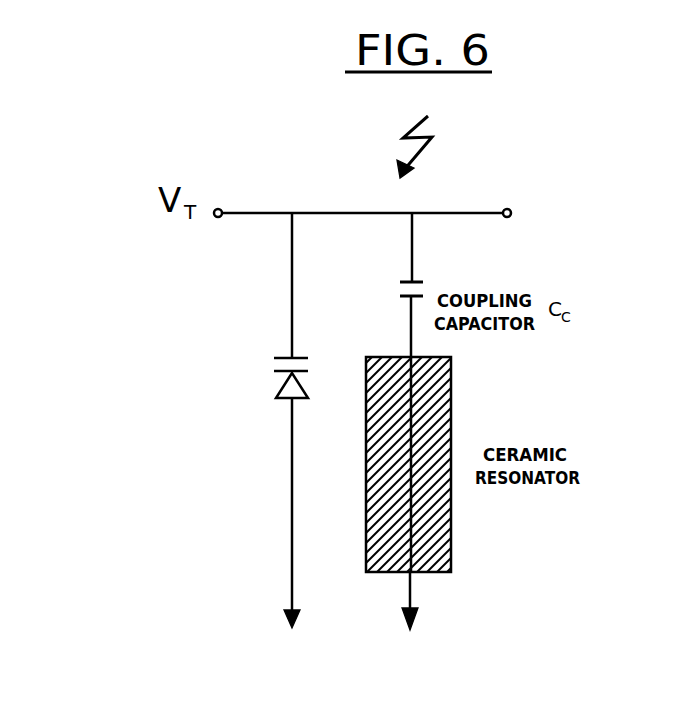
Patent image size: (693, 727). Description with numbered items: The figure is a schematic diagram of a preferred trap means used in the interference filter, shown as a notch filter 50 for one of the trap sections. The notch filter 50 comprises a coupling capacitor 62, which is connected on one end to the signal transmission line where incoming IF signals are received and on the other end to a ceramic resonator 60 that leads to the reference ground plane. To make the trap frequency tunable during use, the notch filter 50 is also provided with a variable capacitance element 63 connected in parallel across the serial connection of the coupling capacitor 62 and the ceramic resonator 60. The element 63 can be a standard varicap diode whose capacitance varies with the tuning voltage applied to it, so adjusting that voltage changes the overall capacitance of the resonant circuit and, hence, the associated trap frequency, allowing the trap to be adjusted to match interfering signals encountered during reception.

The notch filter 50 is at (480, 143).
The ceramic resonator 60 is at (440, 422).
The coupling capacitor 62 is at (415, 282).
The variable capacitance element 63 is at (264, 420).